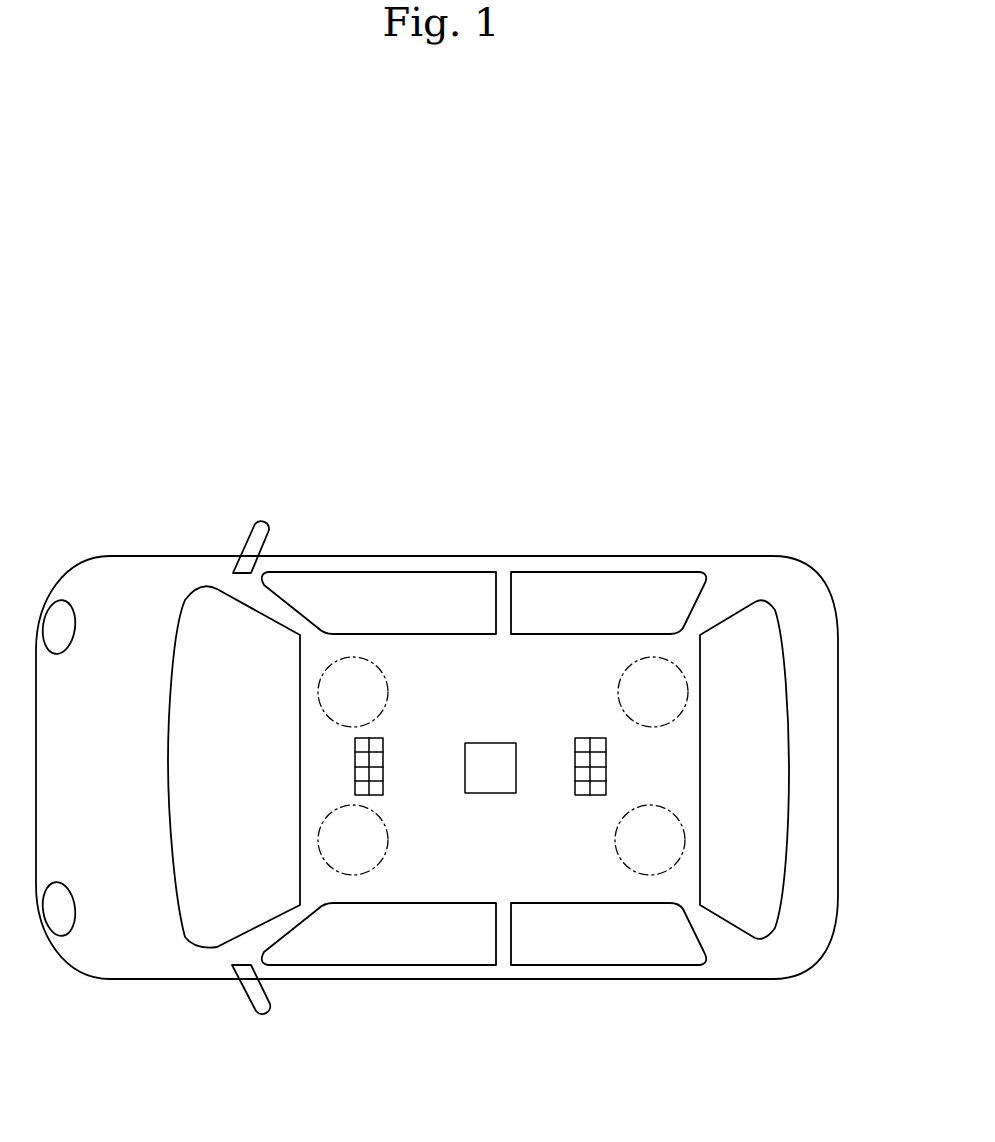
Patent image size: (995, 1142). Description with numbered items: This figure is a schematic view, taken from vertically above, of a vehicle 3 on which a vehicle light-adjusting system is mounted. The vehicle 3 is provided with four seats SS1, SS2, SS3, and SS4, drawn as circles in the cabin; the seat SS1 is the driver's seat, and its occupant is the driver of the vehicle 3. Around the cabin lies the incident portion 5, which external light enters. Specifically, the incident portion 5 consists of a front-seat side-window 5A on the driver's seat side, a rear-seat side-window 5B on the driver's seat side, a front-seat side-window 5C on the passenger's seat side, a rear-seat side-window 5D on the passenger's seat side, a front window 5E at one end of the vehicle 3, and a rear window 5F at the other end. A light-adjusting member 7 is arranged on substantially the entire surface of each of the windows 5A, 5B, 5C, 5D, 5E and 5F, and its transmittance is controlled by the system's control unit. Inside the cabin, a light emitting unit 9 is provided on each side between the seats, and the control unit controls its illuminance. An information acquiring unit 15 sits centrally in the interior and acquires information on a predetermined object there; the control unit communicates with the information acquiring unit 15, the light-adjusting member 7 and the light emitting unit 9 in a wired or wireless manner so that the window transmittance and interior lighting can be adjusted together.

The vehicle 3 is at (175, 537).
The incident portion 5 is at (472, 760).
The front-seat side-window 5A is at (400, 615).
The rear-seat side-window 5B is at (570, 610).
The front-seat side-window 5C is at (433, 937).
The rear-seat side-window 5D is at (557, 935).
The front window 5E is at (185, 768).
The rear window 5F is at (767, 752).
The light-adjusting member 7 is at (462, 618).
The light emitting unit 9 is at (606, 772).
The information acquiring unit 15 is at (488, 794).
The seat SS1 is at (355, 677).
The seat SS2 is at (655, 677).
The seat SS3 is at (356, 842).
The seat SS4 is at (637, 858).